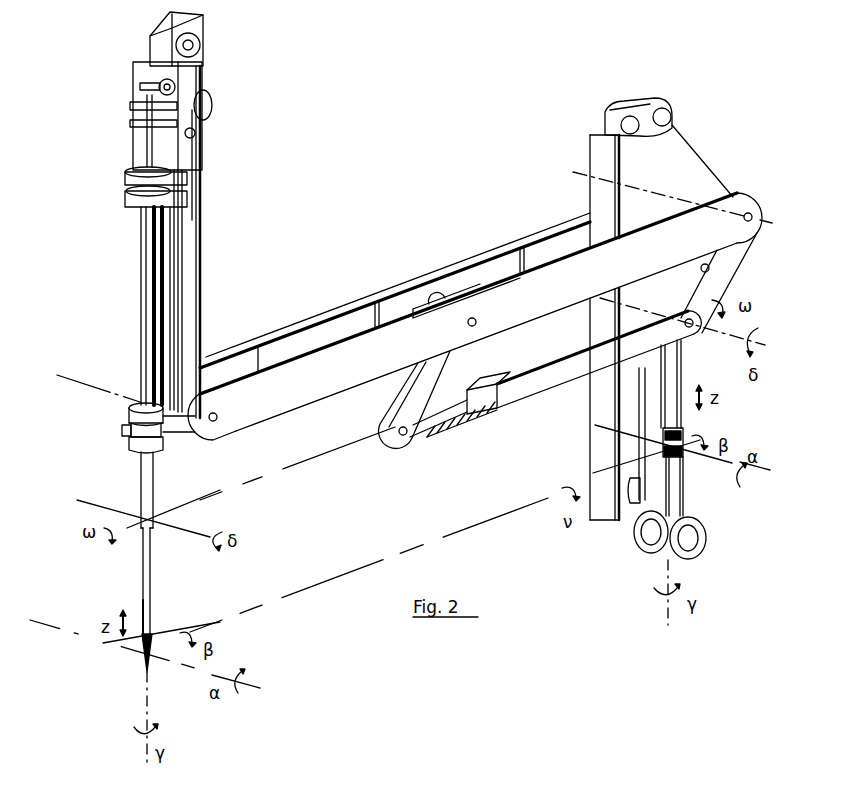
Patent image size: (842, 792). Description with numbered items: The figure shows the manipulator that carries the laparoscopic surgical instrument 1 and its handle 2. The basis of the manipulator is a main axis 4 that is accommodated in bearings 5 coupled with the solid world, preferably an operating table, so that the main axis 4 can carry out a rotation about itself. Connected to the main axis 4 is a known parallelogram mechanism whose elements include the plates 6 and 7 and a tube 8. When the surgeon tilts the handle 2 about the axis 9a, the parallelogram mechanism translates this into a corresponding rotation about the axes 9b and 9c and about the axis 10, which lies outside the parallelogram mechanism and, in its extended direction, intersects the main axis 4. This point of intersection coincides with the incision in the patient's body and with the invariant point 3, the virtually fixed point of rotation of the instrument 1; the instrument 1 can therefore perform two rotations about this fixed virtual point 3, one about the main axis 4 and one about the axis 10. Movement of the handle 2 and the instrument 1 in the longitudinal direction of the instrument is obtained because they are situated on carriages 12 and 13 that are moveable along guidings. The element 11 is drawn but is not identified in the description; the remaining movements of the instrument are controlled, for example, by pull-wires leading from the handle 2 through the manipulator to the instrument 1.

The instrument 1 is at (152, 622).
The handle 2 is at (681, 421).
The invariant point 3 is at (150, 512).
The main axis 4 is at (382, 445).
The bearings 5 is at (462, 427).
The plate 6 is at (410, 440).
The plate 7 is at (695, 284).
The tube 8 is at (708, 234).
The axis 9a is at (616, 356).
The axis 9b is at (762, 222).
The axis 9c is at (220, 424).
The axis 10 is at (134, 512).
The instrument holder / chuck 11 is at (146, 474).
The carriage 12 is at (640, 410).
The carriage 13 is at (178, 290).